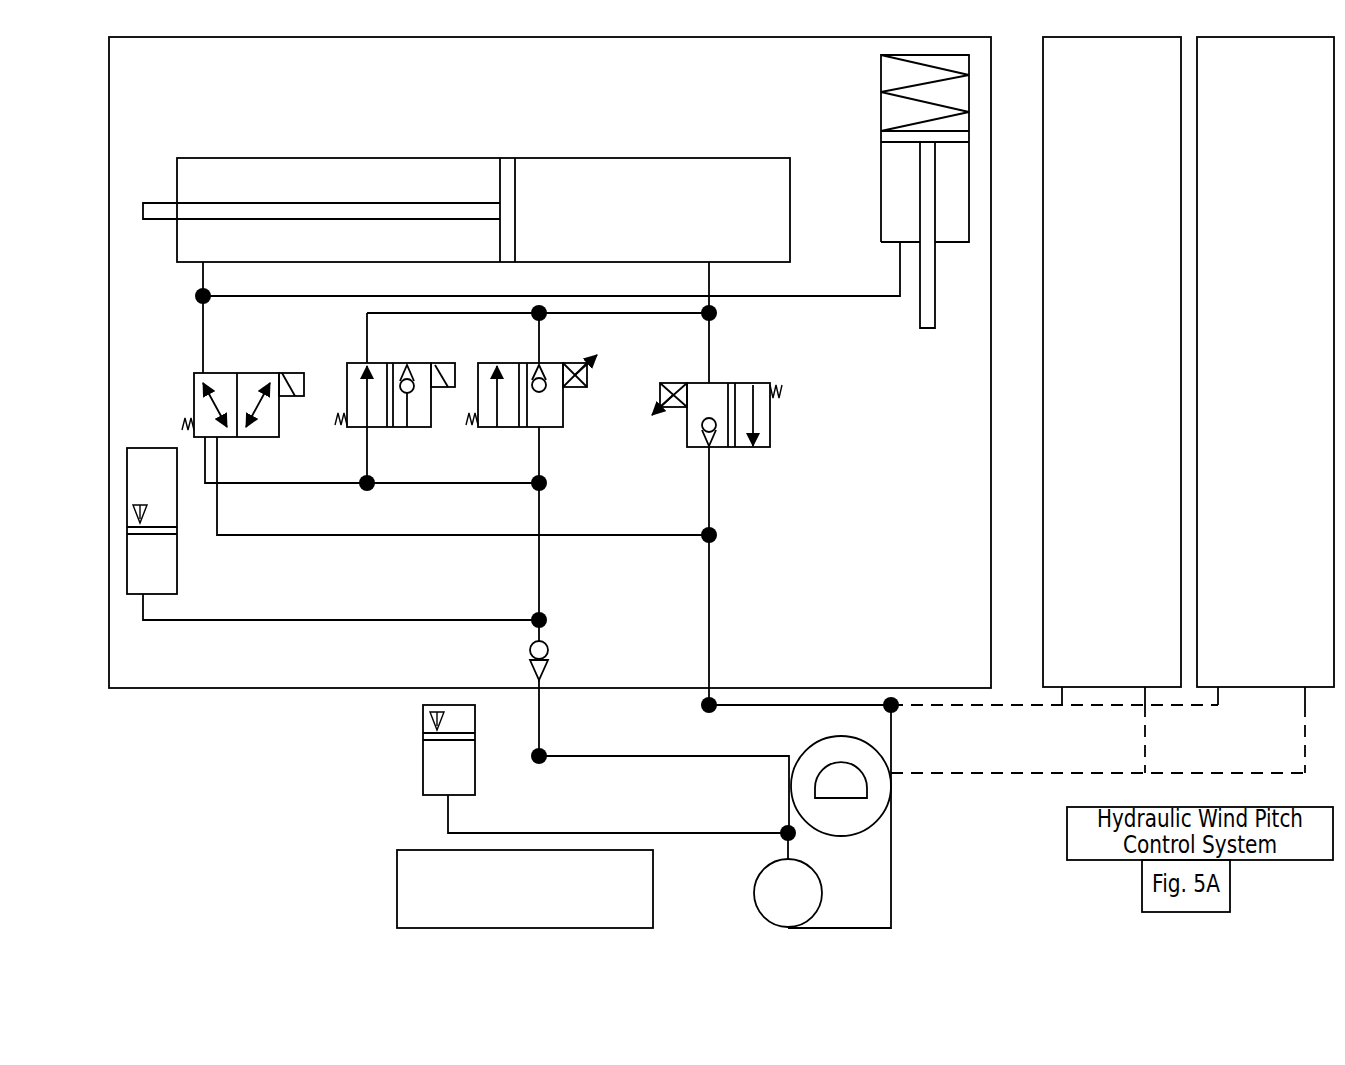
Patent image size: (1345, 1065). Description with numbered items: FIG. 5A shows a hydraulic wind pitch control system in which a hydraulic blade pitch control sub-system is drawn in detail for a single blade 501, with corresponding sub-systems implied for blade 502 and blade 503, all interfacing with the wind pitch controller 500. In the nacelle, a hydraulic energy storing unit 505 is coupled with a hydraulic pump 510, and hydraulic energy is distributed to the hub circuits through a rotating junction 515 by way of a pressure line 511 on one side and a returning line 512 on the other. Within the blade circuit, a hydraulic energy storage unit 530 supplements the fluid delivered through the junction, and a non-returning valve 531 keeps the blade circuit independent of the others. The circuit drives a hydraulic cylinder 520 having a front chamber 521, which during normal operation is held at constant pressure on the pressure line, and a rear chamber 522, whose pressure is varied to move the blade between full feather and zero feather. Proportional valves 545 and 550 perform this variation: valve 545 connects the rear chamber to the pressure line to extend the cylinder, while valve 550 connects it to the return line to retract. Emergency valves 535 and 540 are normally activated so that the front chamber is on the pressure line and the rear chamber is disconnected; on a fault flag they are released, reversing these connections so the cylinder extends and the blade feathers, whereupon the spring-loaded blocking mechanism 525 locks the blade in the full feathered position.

The wind pitch controller 500 is at (525, 889).
The blade 1 501 is at (550, 362).
The blade 2 502 is at (1112, 371).
The blade 3 503 is at (1265, 371).
The hydraulic energy storing unit 505 is at (422, 750).
The hydraulic pump 510 is at (760, 893).
The pressure line 511 is at (810, 786).
The returning line 512 is at (870, 816).
The rotating junction 515 is at (839, 793).
The hydraulic cylinder 520 is at (466, 195).
The front chamber 521 is at (338, 210).
The rear chamber 522 is at (652, 210).
The blocking mechanism 525 is at (893, 191).
The hydraulic energy storage unit 530 is at (143, 508).
The non-returning valve 531 is at (571, 660).
The emergency valve 535 is at (243, 391).
The emergency valve 540 is at (395, 382).
The proportional valve 545 is at (531, 382).
The proportional valve 550 is at (717, 401).